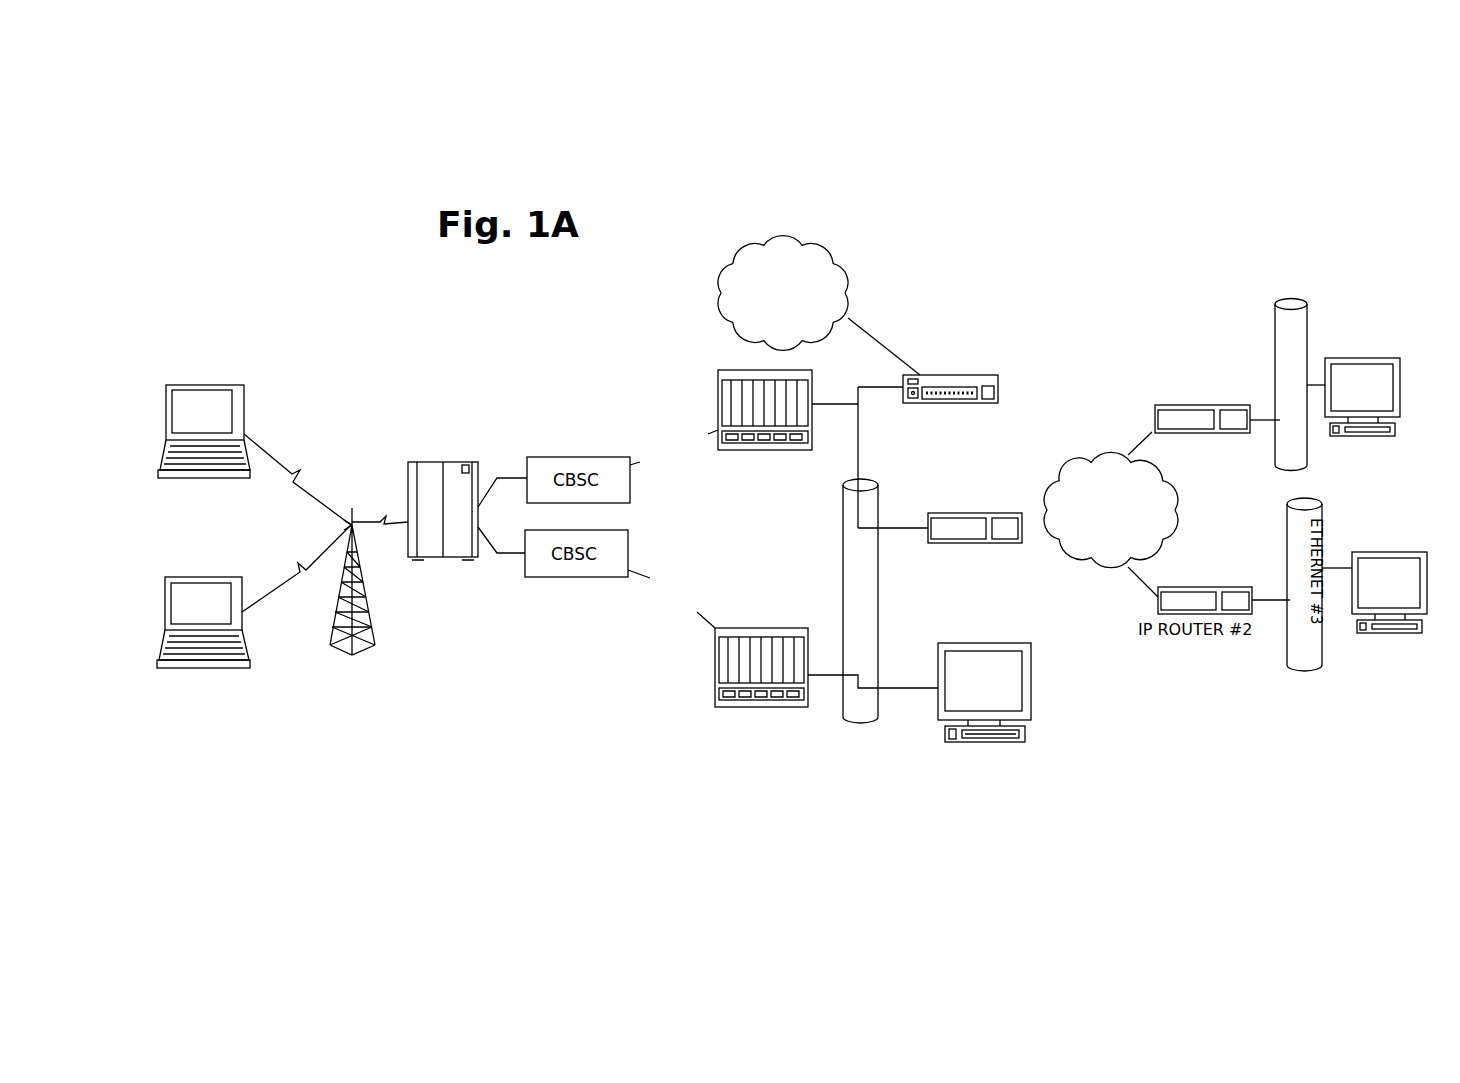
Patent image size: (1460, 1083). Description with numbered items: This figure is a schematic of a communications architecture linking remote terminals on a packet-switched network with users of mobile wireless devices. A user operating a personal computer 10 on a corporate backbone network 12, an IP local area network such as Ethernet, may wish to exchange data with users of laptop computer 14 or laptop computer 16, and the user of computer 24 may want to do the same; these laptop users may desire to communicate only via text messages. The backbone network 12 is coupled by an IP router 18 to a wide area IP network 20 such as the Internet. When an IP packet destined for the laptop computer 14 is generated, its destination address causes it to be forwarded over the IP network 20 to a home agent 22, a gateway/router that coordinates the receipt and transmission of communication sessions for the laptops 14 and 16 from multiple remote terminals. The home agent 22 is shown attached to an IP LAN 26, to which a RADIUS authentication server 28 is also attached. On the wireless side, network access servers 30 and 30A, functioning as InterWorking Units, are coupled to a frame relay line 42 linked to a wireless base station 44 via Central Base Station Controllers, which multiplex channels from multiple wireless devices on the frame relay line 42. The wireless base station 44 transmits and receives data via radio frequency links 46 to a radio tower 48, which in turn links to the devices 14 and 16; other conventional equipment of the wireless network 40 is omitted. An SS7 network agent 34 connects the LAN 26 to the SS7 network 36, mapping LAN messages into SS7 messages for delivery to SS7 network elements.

The personal computer 10 is at (1365, 356).
The corporate backbone network 12 is at (1278, 308).
The laptop computer 14 is at (208, 386).
The laptop computer 16 is at (208, 578).
The IP router 18 is at (1185, 405).
The wide area IP network 20 is at (1046, 488).
The home agent 22 is at (962, 513).
The computer 24 is at (1388, 552).
The ethernet #1 26 is at (843, 518).
The RADIUS server 28 is at (1033, 680).
The network access server 30 is at (716, 392).
The network access server 30A is at (713, 680).
The SS7 network agent 34 is at (962, 375).
The SS7 network 36 is at (832, 250).
The wireless network 40 is at (358, 378).
The frame relay line 42 is at (650, 430).
The wireless base station 44 is at (440, 462).
The radio frequency links 46 is at (370, 520).
The radio tower 48 is at (335, 605).